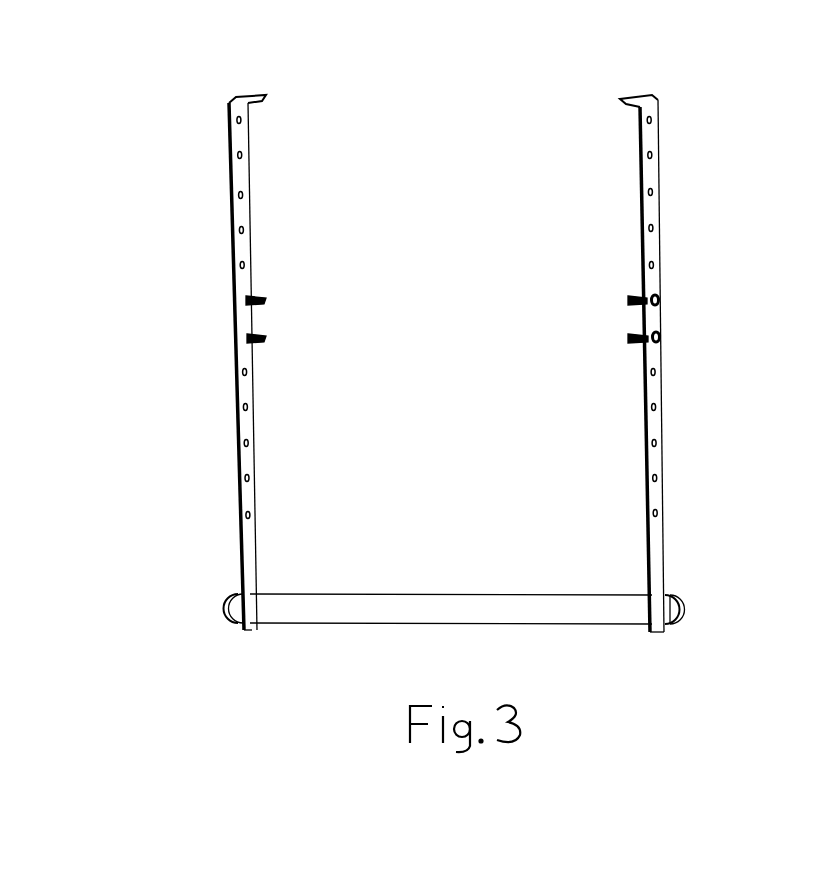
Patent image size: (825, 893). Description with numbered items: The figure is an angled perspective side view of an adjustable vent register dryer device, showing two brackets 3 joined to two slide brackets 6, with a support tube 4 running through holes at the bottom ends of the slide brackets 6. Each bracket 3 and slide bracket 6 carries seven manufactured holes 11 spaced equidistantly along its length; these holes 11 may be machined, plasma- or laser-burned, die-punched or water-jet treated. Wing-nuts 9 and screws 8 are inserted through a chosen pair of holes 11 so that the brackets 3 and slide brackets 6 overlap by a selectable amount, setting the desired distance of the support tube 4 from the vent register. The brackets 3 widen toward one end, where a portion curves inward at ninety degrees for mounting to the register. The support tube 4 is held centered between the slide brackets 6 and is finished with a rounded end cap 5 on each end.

The bracket 3 is at (210, 217).
The support tube 4 is at (295, 645).
The rounded end cap 5 is at (208, 612).
The slide bracket 6 is at (210, 465).
The screw 8 is at (663, 300).
The wing-nut 9 is at (275, 340).
The manufactured hole 11 is at (237, 148).